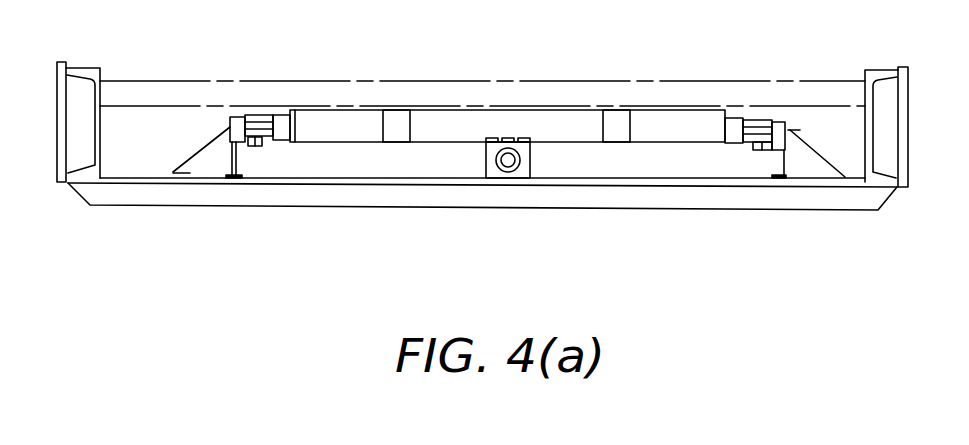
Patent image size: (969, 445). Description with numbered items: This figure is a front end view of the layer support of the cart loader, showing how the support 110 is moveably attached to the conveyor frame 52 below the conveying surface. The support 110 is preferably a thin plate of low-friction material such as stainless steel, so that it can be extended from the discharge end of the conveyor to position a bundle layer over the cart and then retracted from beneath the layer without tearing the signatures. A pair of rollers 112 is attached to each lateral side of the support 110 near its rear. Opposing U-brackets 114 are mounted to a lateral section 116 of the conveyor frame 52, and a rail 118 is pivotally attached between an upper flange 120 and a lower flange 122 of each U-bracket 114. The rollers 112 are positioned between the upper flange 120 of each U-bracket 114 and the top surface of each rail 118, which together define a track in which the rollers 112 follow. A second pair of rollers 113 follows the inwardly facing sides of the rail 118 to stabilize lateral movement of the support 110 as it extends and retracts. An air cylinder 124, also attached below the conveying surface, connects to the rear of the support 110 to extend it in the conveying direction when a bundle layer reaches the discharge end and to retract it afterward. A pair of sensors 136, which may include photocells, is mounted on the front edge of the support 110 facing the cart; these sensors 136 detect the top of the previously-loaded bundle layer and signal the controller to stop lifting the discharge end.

The conveyor frame 52 is at (55, 72).
The support 110 is at (512, 108).
The pair of rollers 112 is at (228, 127).
The second pair of rollers 113 is at (263, 147).
The U-bracket 114 is at (232, 147).
The lateral section 116 is at (381, 180).
The rail 118 is at (231, 173).
The upper flange 120 is at (239, 112).
The lower flange 122 is at (237, 148).
The air cylinder 124 is at (531, 182).
The sensors 136 is at (397, 122).